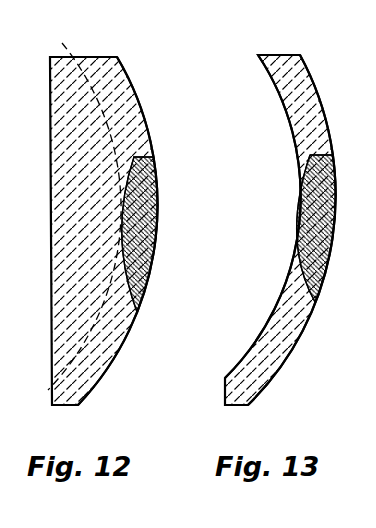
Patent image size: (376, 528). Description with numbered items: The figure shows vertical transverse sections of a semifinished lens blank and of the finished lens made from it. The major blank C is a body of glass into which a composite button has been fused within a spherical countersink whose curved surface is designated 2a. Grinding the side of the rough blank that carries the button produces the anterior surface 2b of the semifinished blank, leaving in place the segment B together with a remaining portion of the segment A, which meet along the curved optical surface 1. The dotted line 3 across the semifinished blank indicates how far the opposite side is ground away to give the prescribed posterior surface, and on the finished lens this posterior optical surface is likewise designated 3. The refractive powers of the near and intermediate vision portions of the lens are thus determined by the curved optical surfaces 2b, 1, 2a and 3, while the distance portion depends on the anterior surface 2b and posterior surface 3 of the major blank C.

In FIG. 12, the optical surface 1 is at (152, 187).
In FIG. 13, the optical surface 1 is at (328, 163).
In FIG. 12, the spherical countersink surface 2a is at (128, 273).
In FIG. 13, the spherical countersink surface 2a is at (307, 163).
In FIG. 12, the anterior surface 2b is at (137, 107).
In FIG. 13, the anterior surface 2b is at (322, 105).
In FIG. 12, the posterior optical surface 3 is at (70, 222).
In FIG. 13, the posterior optical surface 3 is at (282, 102).
In FIG. 12, the segment A is at (142, 157).
In FIG. 13, the segment A is at (308, 182).
In FIG. 12, the segment B is at (145, 213).
In FIG. 13, the segment B is at (318, 208).
In FIG. 12, the major blank C is at (70, 117).
In FIG. 13, the major blank C is at (288, 307).